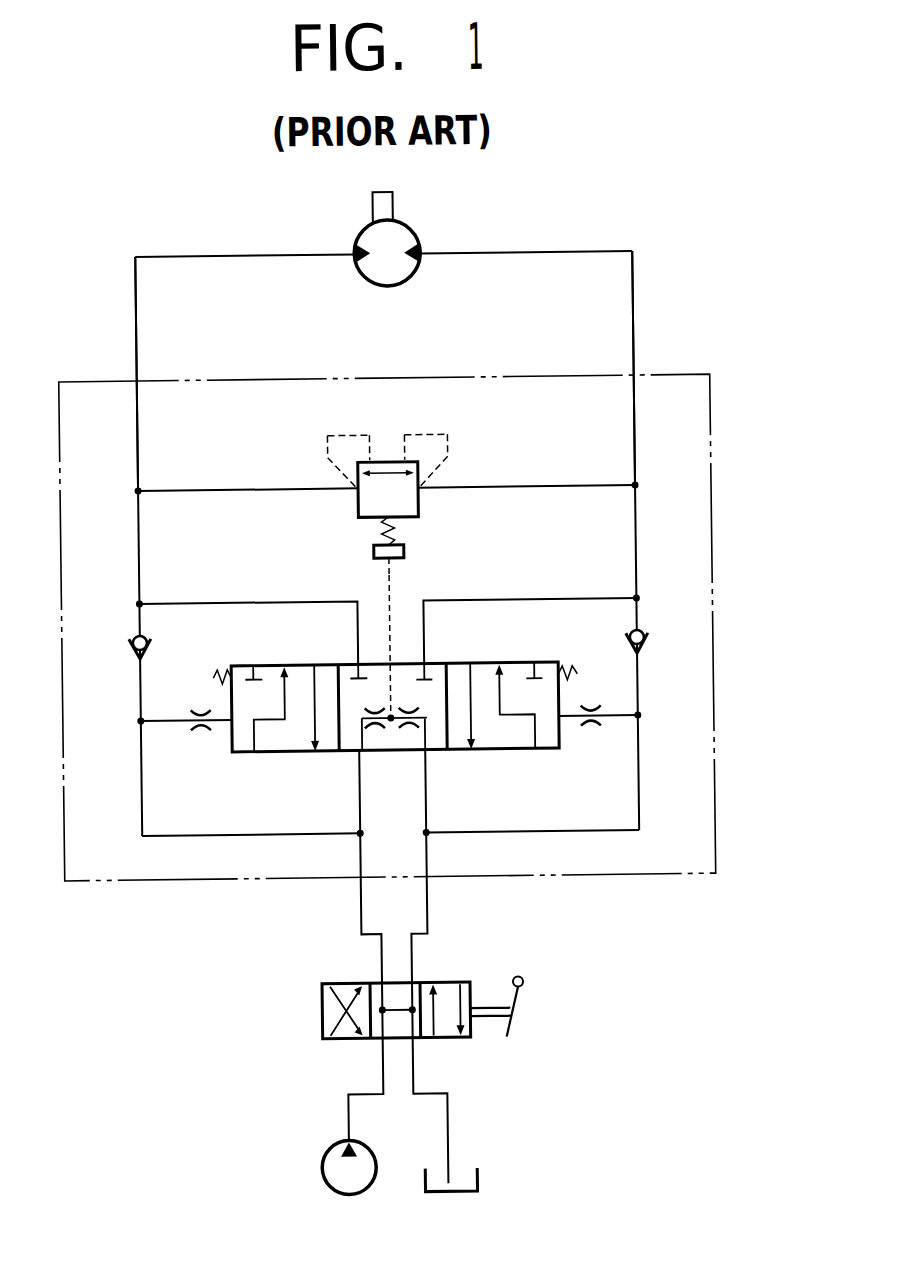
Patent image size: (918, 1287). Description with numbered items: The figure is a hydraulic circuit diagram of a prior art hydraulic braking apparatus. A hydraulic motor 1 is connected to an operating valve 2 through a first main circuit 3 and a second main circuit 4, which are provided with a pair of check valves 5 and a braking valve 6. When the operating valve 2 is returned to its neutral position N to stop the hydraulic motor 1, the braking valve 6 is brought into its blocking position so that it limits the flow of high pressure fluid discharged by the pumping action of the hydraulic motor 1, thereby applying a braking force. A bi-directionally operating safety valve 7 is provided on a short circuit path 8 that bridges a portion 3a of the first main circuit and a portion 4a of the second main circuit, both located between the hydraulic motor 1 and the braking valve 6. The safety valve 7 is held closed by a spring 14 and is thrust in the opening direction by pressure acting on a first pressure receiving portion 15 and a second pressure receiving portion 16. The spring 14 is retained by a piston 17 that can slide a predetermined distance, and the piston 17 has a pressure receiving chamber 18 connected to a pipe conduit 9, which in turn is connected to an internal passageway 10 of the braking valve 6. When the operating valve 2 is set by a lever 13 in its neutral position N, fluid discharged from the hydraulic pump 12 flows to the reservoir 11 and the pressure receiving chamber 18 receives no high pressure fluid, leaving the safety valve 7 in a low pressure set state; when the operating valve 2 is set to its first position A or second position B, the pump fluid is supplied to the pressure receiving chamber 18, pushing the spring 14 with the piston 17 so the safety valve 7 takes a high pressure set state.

The hydraulic motor 1 is at (405, 235).
The operating valve 2 is at (458, 984).
The first main circuit 3 is at (141, 449).
The portion of first main circuit 3a is at (141, 437).
The second main circuit 4 is at (640, 461).
The portion of second main circuit 4a is at (638, 412).
The check valve 5 is at (130, 645).
The braking valve 6 is at (265, 663).
The safety valve 7 is at (390, 460).
The short circuit path 8 is at (232, 490).
The pipe conduit 9 is at (386, 590).
The internal passageway 10 is at (392, 688).
The reservoir 11 is at (472, 1176).
The hydraulic pump 12 is at (324, 1149).
The lever 13 is at (521, 984).
The spring 14 is at (382, 528).
The first pressure receiving portion 15 is at (372, 460).
The second pressure receiving portion 16 is at (414, 460).
The piston 17 is at (401, 550).
The pressure receiving chamber 18 is at (394, 560).